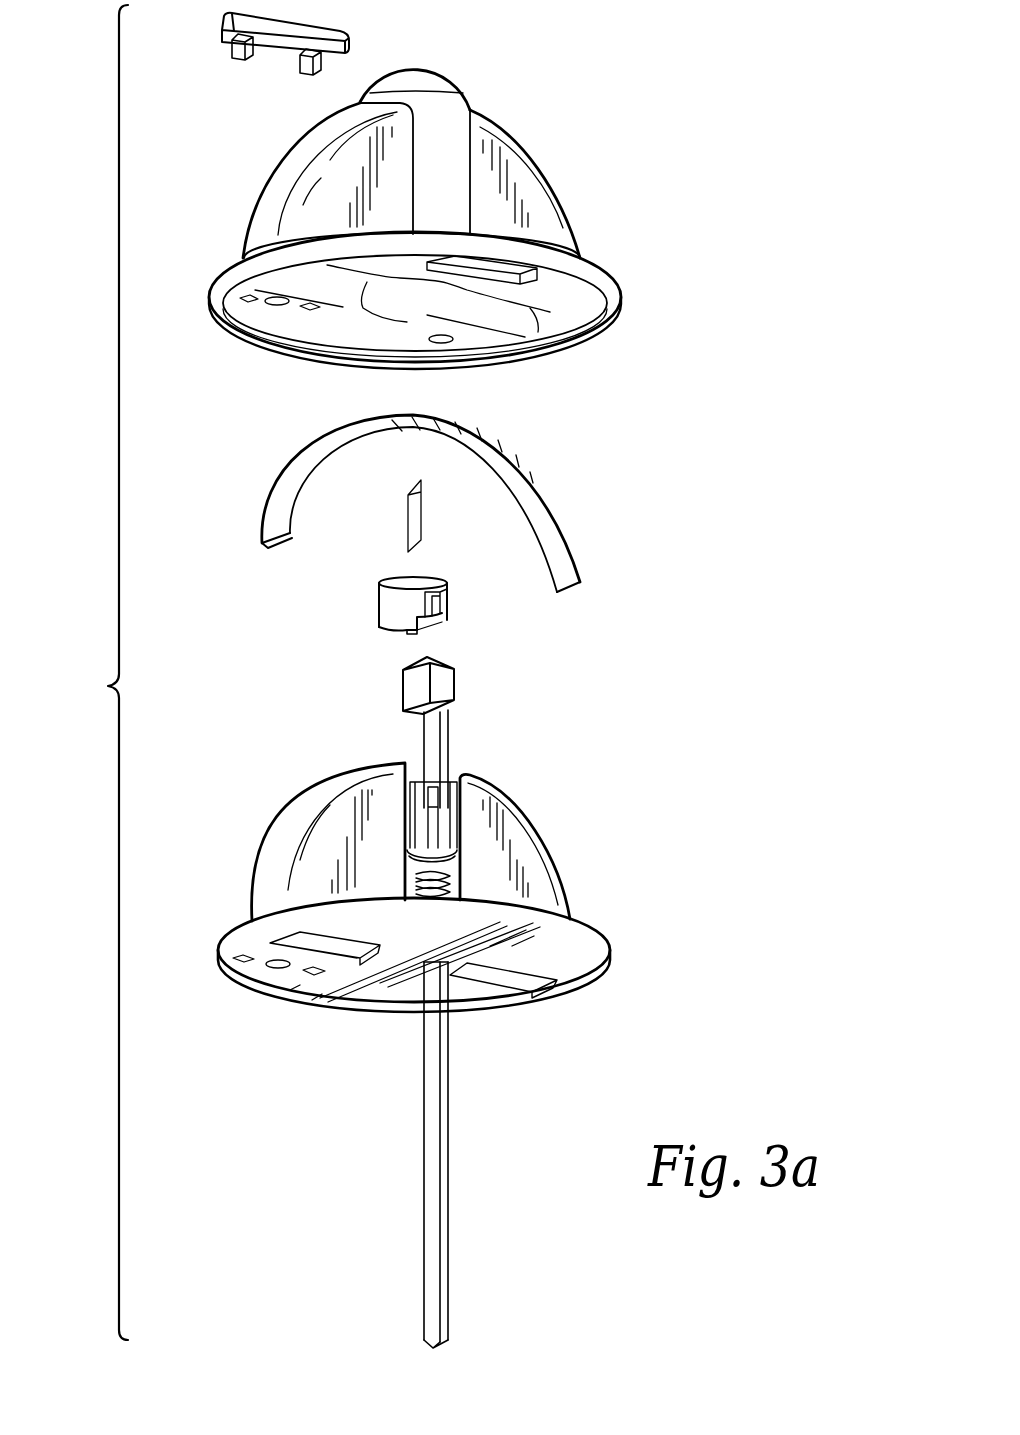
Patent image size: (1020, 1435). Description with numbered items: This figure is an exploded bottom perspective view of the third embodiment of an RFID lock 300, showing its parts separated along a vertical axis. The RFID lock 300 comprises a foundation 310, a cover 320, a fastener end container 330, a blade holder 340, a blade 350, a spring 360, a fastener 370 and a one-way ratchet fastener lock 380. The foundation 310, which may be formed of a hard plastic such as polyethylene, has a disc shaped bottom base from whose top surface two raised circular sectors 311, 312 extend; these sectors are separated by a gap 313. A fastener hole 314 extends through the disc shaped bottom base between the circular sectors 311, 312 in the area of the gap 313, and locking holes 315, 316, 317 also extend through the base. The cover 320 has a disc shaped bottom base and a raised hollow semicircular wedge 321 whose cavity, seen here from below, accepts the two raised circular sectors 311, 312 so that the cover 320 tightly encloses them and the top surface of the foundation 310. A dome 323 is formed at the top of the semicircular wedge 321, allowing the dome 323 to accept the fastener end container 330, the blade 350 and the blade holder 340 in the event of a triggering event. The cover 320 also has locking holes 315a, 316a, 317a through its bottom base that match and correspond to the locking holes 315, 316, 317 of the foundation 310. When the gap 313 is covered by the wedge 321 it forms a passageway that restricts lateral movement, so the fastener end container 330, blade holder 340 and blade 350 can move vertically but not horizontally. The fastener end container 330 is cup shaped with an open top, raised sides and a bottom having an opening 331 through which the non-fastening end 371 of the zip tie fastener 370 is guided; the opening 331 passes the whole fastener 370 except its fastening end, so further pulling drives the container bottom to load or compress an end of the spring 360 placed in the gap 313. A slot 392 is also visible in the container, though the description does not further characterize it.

The RFID lock 300 is at (91, 672).
The foundation 310 is at (443, 1005).
The raised circular sector 311 is at (557, 875).
The raised circular sector 312 is at (275, 835).
The gap 313 is at (469, 745).
The fastener hole 314 is at (482, 982).
The locking hole 315 is at (236, 989).
The locking hole 316 is at (278, 997).
The locking hole 317 is at (316, 1002).
The locking hole 315a is at (238, 325).
The locking hole 316a is at (278, 335).
The locking hole 317a is at (315, 337).
The cover 320 is at (617, 270).
The raised hollow semicircular wedge 321 is at (535, 153).
The dome 323 is at (444, 47).
The fastener end container 330 is at (425, 620).
The opening 331 is at (447, 647).
The blade holder 340 is at (408, 683).
The blade 350 is at (407, 522).
The spring 360 is at (462, 883).
The zip tie fastener 370 is at (392, 1110).
The non-fastening end 371 is at (448, 1337).
The one-way ratchet fastener lock 380 is at (220, 28).
The slot in cap 392 is at (432, 603).